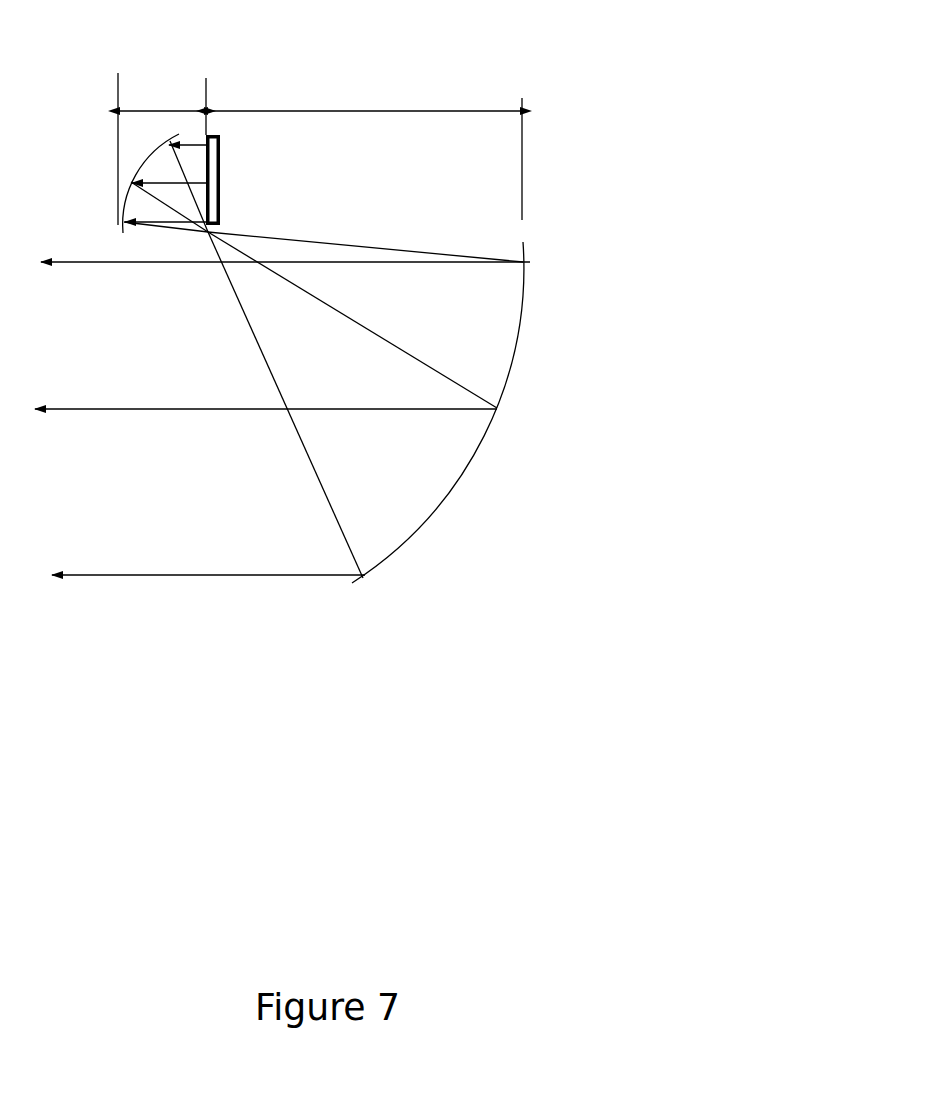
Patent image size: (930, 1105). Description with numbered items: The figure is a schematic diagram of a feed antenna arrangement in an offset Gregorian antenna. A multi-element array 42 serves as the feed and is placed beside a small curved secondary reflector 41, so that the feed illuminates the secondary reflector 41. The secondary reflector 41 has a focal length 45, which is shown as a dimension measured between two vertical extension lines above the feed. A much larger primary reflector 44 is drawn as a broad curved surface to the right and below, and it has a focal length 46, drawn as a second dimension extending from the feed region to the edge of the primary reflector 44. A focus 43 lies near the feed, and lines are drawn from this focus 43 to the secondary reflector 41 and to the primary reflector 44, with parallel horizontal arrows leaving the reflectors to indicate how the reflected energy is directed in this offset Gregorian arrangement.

The secondary reflector 41 is at (130, 192).
The multi-element array 42 is at (222, 177).
The focus 43 is at (202, 235).
The primary reflector 44 is at (522, 360).
The focal length 45 is at (150, 109).
The focal length 46 is at (387, 112).